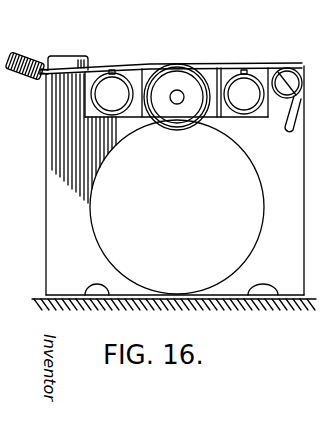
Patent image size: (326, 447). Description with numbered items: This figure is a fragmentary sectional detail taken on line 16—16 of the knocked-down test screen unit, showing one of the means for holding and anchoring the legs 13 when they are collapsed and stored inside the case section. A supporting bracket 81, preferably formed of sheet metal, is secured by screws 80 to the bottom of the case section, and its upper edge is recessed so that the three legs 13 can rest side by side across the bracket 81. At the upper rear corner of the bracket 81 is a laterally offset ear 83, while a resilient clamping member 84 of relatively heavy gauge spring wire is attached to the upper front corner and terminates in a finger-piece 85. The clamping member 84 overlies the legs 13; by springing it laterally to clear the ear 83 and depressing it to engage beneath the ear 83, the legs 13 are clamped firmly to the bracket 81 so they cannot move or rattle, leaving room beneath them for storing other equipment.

The adjustable legs 13 is at (232, 112).
The section line 16— 16 is at (77, 301).
The screws 80 is at (107, 290).
The supporting brackets 81 is at (55, 177).
The laterally offset ear 83 is at (72, 55).
The resilient clamping member 84 is at (158, 55).
The finger-piece 85 is at (32, 54).